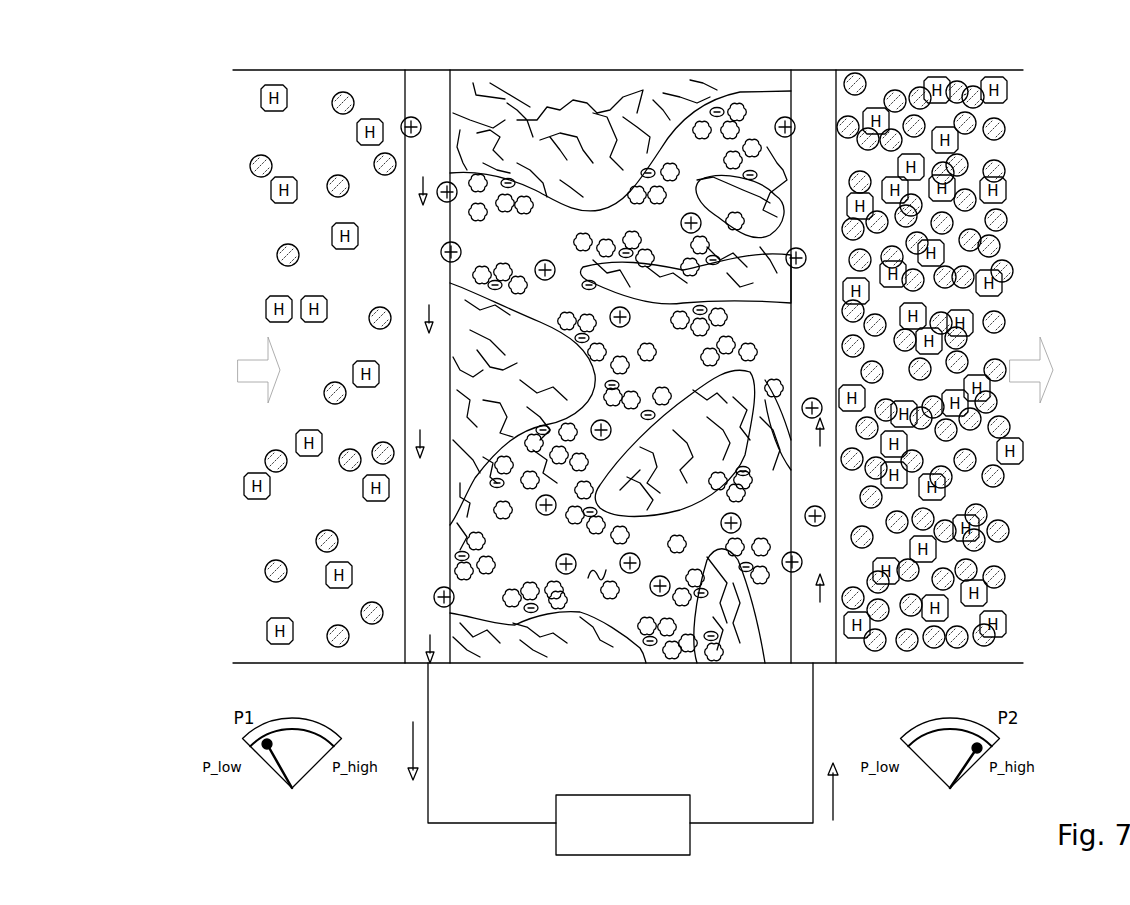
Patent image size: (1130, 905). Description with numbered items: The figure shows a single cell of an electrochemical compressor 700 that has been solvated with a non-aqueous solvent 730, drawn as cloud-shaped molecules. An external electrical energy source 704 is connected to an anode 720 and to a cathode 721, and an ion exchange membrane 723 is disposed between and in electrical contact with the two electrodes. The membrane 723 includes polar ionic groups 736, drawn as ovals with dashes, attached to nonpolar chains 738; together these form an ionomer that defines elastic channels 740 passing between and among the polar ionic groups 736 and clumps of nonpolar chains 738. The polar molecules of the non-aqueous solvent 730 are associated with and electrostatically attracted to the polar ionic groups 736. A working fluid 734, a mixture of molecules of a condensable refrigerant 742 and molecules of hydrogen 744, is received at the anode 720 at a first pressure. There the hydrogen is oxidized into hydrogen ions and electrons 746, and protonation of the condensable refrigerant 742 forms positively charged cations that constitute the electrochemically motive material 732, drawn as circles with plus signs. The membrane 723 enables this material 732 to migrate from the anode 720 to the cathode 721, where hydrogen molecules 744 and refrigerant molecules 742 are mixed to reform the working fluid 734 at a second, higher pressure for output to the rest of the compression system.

The electrochemical compressor 700 is at (168, 105).
The external electrical energy source 704 is at (620, 825).
The anode 720 is at (424, 87).
The cathode 721 is at (813, 85).
The ion exchange membrane 723 is at (572, 385).
The non-aqueous solvent 730 is at (690, 650).
The electrochemically motive material 732 is at (410, 117).
The working fluid 734 is at (306, 132).
The polar ionic groups 736 is at (508, 177).
The nonpolar chains 738 is at (540, 650).
The elastic channels 740 is at (600, 570).
The condensable refrigerant 742 is at (1003, 120).
The hydrogen molecules 744 is at (278, 297).
The electrons 746 is at (393, 811).